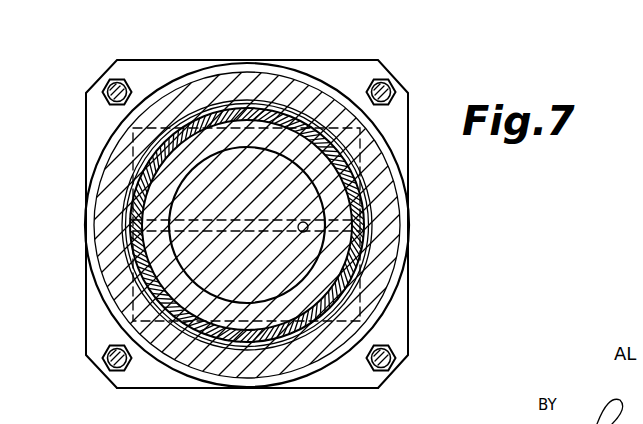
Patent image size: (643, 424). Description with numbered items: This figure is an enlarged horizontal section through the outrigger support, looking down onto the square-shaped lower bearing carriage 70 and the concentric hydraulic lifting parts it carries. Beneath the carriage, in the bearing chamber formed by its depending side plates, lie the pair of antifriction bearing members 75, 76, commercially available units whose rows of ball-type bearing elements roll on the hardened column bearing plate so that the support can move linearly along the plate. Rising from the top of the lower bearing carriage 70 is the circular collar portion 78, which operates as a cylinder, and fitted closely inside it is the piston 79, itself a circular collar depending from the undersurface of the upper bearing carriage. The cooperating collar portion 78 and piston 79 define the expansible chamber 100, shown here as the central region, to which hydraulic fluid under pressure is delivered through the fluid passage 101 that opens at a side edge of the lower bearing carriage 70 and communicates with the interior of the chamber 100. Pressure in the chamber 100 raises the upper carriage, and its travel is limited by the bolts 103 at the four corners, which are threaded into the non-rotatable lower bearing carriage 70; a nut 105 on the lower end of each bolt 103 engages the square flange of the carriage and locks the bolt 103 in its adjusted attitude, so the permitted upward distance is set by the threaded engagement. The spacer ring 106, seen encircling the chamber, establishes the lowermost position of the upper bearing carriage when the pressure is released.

The lower bearing carriage 70 is at (406, 233).
The antifriction bearing member 75 is at (196, 388).
The antifriction bearing member 76 is at (284, 72).
The circular collar portion 78 is at (390, 212).
The piston 79 is at (345, 258).
The expansible chamber 100 is at (273, 206).
The fluid passage 101 is at (304, 233).
The bolt 103 is at (113, 79).
The nut 105 is at (122, 82).
The spacer ring 106 is at (291, 150).